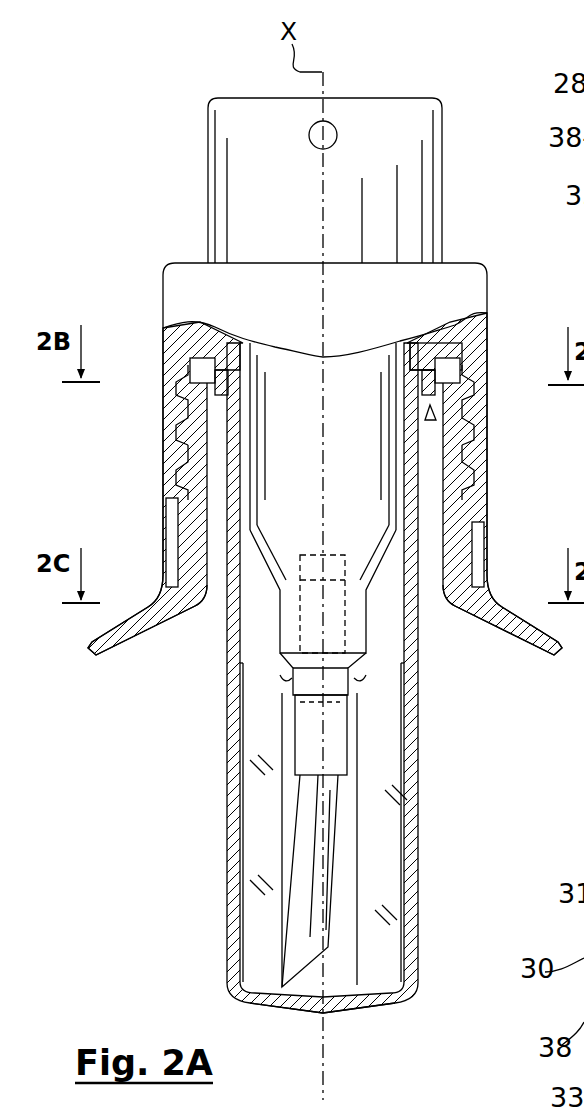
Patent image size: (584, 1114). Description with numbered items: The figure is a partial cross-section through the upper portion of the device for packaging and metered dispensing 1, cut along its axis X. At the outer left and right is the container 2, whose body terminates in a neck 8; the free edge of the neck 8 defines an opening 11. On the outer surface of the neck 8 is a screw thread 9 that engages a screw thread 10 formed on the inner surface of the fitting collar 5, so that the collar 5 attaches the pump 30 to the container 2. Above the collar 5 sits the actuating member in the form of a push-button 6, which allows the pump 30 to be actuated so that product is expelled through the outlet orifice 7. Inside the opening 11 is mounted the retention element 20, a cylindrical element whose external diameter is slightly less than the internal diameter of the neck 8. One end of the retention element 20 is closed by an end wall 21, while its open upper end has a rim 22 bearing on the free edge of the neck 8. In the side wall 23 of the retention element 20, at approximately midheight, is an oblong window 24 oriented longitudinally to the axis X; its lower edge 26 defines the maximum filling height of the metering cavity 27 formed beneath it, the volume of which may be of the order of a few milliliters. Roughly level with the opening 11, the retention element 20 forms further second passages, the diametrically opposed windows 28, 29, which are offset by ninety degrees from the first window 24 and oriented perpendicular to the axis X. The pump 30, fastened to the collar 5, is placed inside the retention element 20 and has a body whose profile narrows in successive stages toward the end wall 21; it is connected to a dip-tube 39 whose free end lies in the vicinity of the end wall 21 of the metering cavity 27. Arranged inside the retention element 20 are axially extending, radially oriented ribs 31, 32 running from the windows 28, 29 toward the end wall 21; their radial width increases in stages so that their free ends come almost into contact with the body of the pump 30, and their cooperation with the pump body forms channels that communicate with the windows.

The device for packaging and metered dispensing 1 is at (160, 206).
The container 2 is at (136, 640).
The fitting collar 5 is at (163, 388).
The push-button 6 is at (446, 179).
The outlet orifice 7 is at (337, 135).
The neck 8 is at (172, 540).
The screw thread 9 is at (177, 456).
The screw thread 10 is at (185, 436).
The opening 11 is at (433, 414).
The retention element 20 is at (423, 497).
The end wall 21 is at (342, 1013).
The rim 22 is at (427, 352).
The side wall 23 is at (419, 652).
The window 24 is at (310, 545).
The lower edge 26 is at (310, 705).
The metering cavity 27 is at (358, 823).
The window 28 is at (218, 380).
The window 29 is at (416, 385).
The pump 30 is at (312, 426).
The rib 31 is at (282, 681).
The rib 32 is at (360, 681).
The dip-tube 39 is at (323, 890).